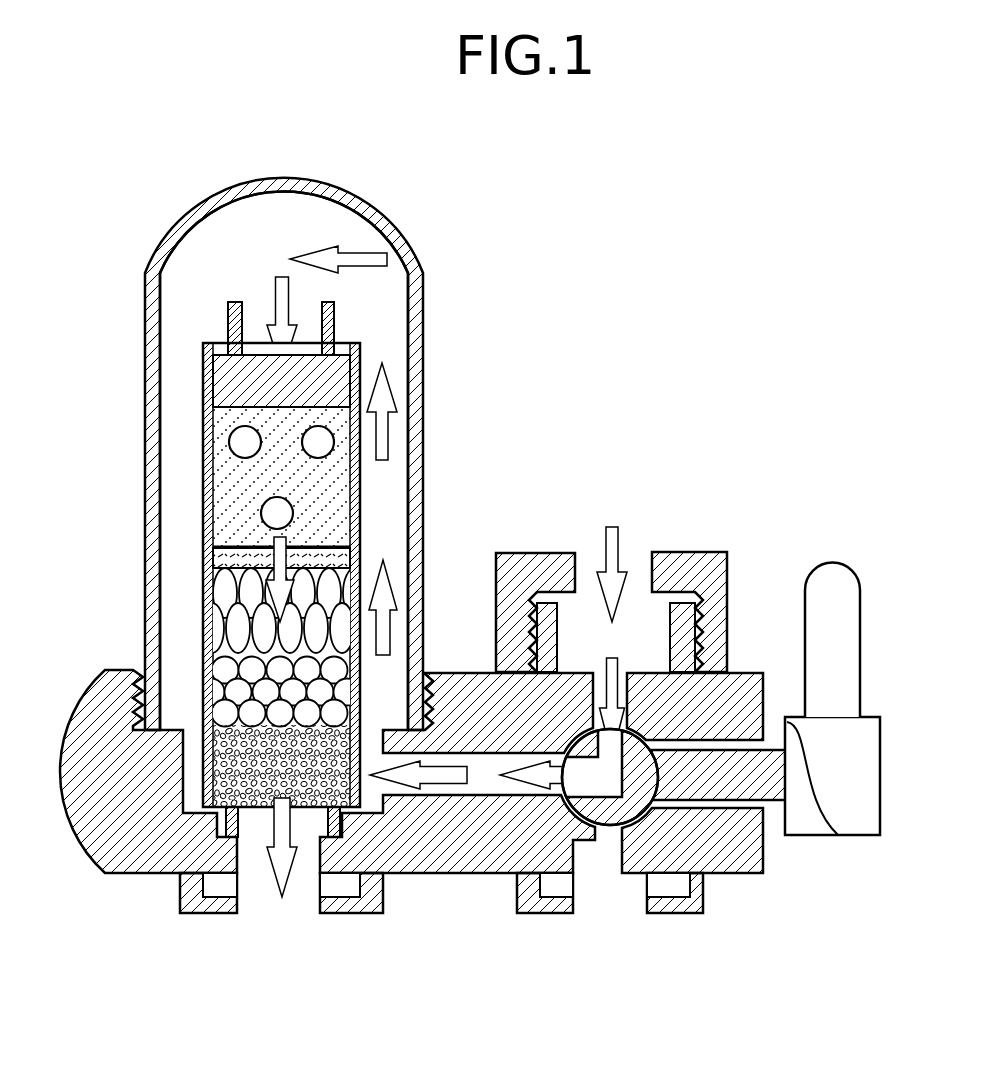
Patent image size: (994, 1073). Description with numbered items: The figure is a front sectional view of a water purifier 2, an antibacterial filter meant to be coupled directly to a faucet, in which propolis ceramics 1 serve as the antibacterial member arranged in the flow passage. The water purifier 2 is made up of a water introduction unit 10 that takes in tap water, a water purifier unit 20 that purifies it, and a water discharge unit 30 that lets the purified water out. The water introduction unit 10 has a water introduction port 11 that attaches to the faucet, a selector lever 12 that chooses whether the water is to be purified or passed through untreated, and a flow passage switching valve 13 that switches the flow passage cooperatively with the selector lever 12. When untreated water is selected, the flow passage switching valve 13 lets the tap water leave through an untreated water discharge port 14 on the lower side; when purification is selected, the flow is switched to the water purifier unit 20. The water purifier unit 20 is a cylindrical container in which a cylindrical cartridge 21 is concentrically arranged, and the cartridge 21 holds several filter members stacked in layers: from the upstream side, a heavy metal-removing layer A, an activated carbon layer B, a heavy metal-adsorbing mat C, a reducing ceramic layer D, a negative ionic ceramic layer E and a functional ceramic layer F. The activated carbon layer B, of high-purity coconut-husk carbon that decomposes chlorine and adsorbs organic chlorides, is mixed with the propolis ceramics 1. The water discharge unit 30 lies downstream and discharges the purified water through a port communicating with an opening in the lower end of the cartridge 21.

The propolis ceramics 1 is at (232, 437).
The water purifier 2 is at (640, 338).
The water introduction unit 10 is at (866, 562).
The water introduction port 11 is at (586, 552).
The selector lever 12 is at (822, 582).
The flow passage switching valve 13 is at (628, 800).
The untreated water discharge port 14 is at (612, 893).
The water purifier unit 20 is at (430, 262).
The cartridge 21 is at (353, 472).
The water discharge unit 30 is at (284, 910).
The heavy metal-removing layer A is at (232, 380).
The activated carbon layer B is at (232, 478).
The heavy metal-adsorbing mat C is at (232, 557).
The reducing ceramic layer D is at (232, 617).
The negative ionic ceramic layer E is at (228, 670).
The functional ceramic layer F is at (212, 740).